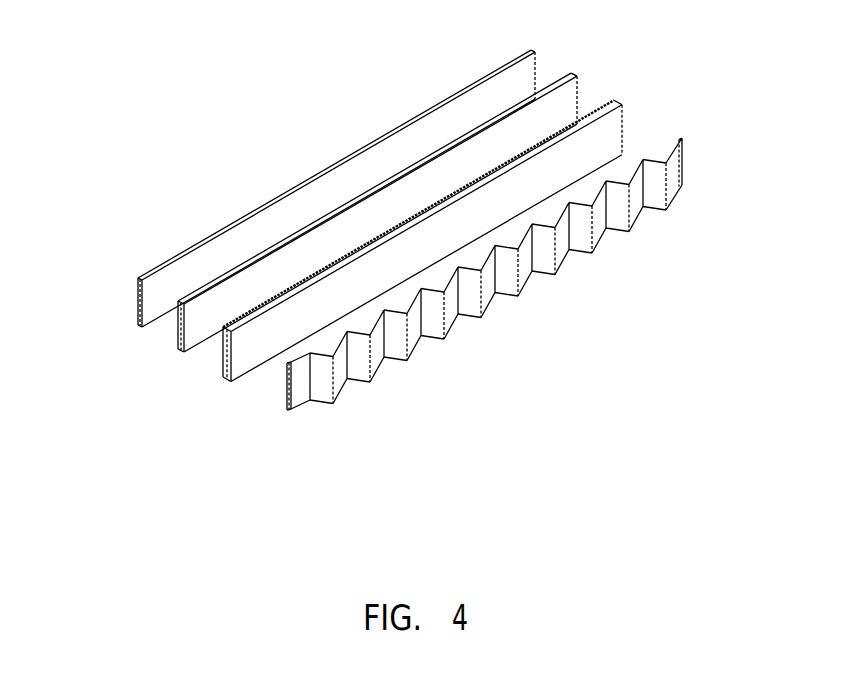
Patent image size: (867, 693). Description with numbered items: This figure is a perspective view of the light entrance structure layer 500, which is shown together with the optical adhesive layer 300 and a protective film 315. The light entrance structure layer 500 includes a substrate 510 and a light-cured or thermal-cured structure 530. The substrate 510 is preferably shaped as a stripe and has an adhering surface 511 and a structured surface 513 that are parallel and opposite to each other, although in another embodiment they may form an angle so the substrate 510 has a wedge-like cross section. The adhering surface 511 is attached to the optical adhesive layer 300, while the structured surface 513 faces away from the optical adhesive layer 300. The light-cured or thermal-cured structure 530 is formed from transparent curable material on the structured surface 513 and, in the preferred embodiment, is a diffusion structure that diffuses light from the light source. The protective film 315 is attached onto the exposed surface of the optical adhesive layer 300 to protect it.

The optical adhesive layer 300 is at (420, 160).
The protective film 315 is at (281, 196).
The light entrance structure layer 500 is at (388, 307).
The substrate 510 is at (223, 373).
The adhering surface 511 is at (260, 303).
The structured surface 513 is at (600, 138).
The light-cured or thermal-cured structure 530 is at (297, 382).